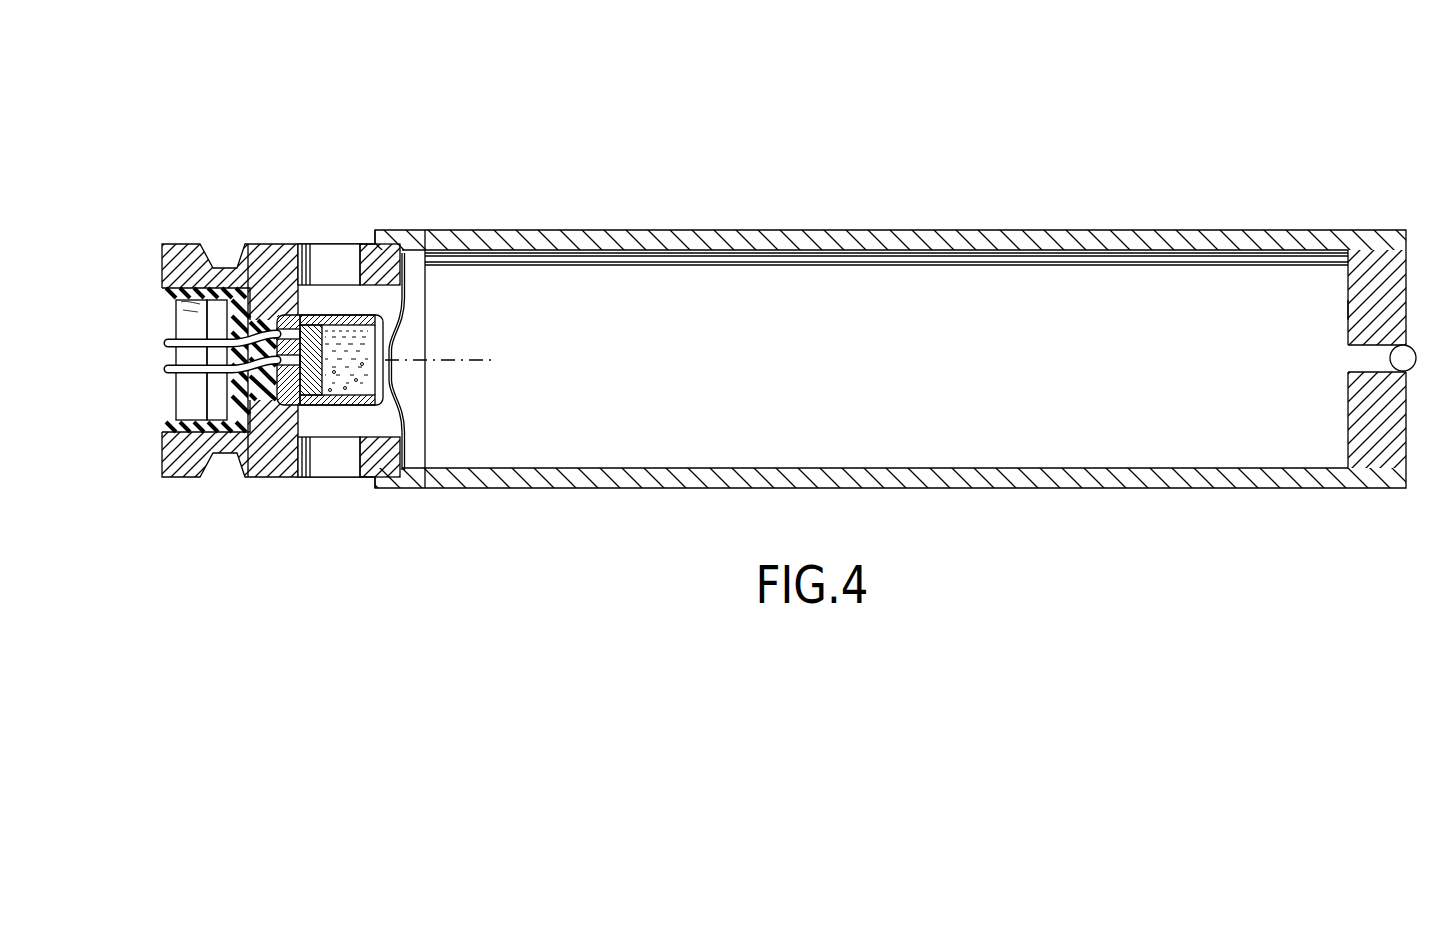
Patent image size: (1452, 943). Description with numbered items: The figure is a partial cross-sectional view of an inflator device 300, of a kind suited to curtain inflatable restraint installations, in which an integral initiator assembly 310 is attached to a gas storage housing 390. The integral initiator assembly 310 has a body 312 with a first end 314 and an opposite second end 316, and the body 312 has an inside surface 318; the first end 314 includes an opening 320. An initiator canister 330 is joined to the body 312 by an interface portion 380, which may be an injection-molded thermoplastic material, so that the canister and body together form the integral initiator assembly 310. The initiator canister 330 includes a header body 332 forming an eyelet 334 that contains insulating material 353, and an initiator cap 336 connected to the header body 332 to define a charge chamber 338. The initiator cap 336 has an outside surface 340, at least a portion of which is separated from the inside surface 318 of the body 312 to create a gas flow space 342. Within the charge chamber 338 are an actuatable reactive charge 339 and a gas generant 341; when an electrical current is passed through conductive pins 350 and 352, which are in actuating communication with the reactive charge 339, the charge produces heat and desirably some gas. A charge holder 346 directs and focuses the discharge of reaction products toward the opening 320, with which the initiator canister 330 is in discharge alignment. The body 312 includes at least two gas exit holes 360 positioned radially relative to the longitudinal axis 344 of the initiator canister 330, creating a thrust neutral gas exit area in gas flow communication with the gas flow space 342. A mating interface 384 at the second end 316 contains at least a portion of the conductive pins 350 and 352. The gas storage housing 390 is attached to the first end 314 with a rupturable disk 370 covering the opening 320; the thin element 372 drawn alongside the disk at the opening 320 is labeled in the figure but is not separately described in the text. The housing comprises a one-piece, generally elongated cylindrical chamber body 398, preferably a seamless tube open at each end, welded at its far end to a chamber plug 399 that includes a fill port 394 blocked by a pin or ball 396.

The inflator device 300 is at (532, 191).
The integral initiator assembly 310 is at (190, 177).
The body 312 is at (255, 243).
The first end 314 is at (432, 477).
The second end 316 is at (162, 272).
The inside surface 318 is at (352, 428).
The opening 320 is at (432, 317).
The initiator canister 330 is at (392, 413).
The header body 332 is at (336, 260).
The eyelet 334 is at (300, 318).
The initiator cap 336 is at (395, 285).
The charge chamber 338 is at (385, 347).
The reactive charge 339 is at (333, 455).
The outside surface 340 is at (350, 302).
The gas generant 341 is at (362, 432).
The gas flow space 342 is at (372, 300).
The longitudinal axis 344 is at (470, 358).
The charge holder 346 is at (385, 389).
The conductive pin 350 is at (166, 371).
The conductive pin 352 is at (166, 341).
The insulating material 353 is at (278, 420).
The gas exit holes 360 is at (337, 233).
The rupturable disk 370 is at (405, 302).
The diaphragm 372 is at (420, 270).
The interface portion 380 is at (237, 382).
The mating interface 384 is at (148, 317).
The gas storage housing 390 is at (1265, 228).
The fill port 394 is at (1348, 359).
The ball 396 is at (1412, 345).
The chamber body 398 is at (1090, 266).
The chamber plug 399 is at (1348, 309).